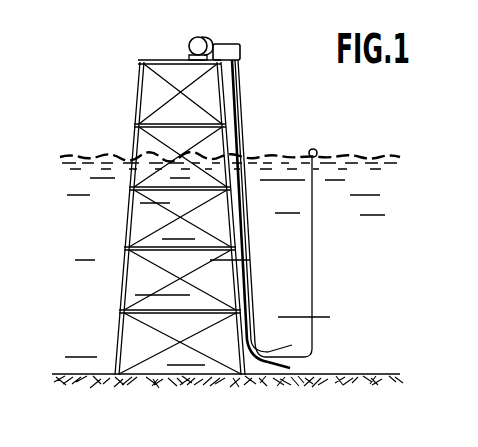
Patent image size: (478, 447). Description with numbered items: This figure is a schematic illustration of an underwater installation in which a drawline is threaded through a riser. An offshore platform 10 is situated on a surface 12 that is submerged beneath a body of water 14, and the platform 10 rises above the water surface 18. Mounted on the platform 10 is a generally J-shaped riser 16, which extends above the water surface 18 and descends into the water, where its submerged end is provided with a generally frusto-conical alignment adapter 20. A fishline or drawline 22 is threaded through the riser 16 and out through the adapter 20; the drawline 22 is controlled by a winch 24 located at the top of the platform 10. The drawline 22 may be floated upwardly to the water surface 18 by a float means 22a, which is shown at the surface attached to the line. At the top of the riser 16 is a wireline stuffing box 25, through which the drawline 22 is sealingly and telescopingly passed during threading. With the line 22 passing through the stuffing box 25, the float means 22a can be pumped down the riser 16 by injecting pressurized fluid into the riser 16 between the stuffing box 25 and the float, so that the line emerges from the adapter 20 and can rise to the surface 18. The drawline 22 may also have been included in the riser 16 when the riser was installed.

The offshore platform 10 is at (121, 107).
The surface 12 is at (86, 376).
The body of water 14 is at (93, 220).
The riser 16 is at (258, 246).
The water surface 18 is at (259, 155).
The alignment adapter 20 is at (281, 335).
The drawline 22 is at (313, 282).
The float means 22a is at (317, 151).
The winch 24 is at (191, 40).
The wireline stuffing box 25 is at (234, 44).